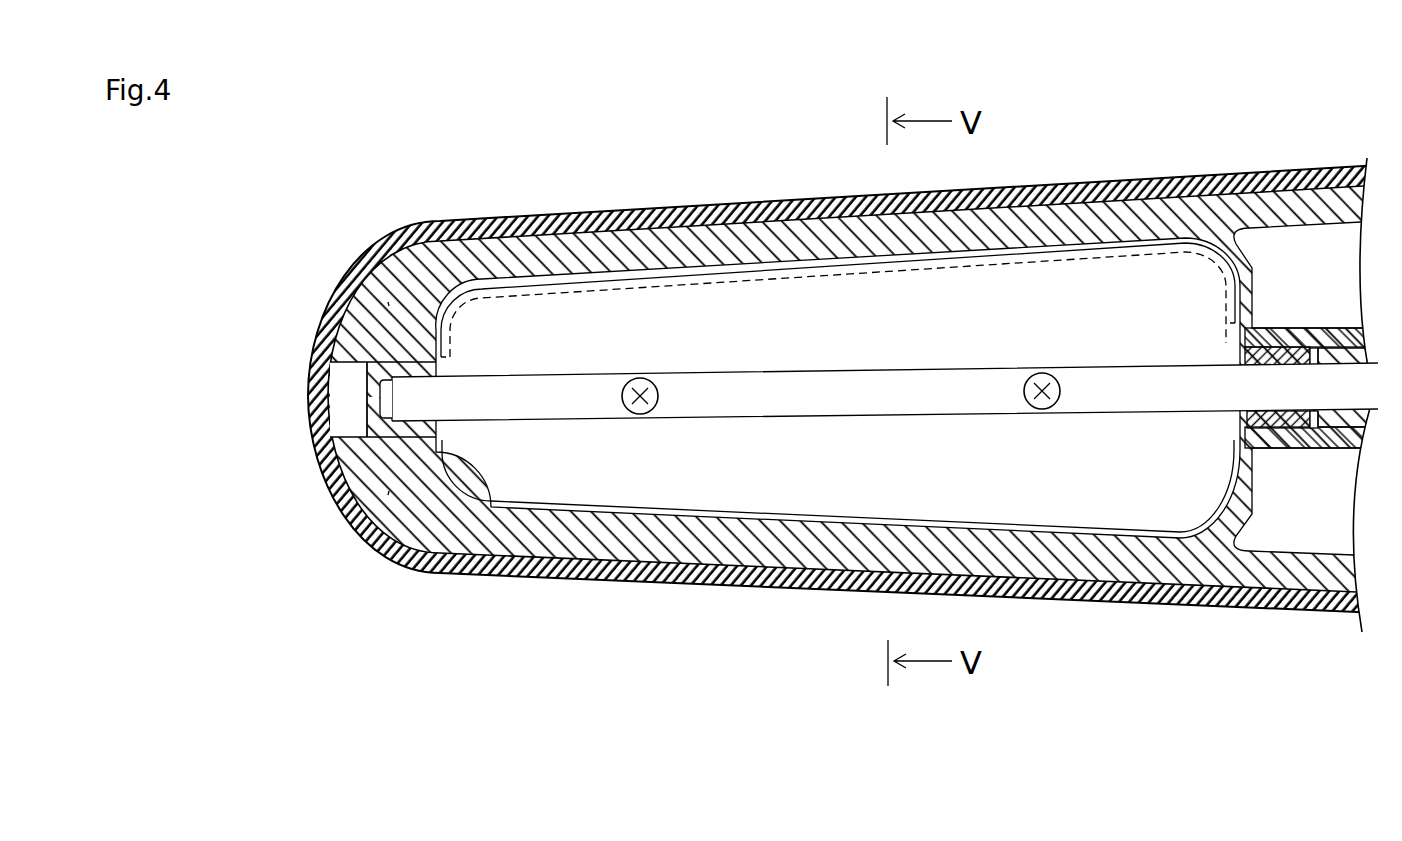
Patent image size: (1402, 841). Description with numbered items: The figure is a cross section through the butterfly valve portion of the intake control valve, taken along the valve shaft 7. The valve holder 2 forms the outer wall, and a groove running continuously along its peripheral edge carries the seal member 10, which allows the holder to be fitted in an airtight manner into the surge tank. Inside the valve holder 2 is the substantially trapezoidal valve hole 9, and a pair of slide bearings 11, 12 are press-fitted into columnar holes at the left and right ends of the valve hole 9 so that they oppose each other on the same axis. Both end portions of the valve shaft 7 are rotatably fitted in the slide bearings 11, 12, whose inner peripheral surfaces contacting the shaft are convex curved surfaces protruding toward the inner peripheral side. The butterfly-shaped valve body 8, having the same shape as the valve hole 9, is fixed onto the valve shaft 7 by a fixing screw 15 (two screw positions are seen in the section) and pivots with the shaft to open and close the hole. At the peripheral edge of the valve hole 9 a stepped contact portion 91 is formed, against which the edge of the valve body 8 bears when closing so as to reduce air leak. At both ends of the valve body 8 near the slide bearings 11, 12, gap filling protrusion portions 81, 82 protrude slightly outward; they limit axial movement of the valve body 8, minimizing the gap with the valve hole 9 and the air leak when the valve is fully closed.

The valve holder 2 is at (548, 216).
The seal member 10 is at (640, 212).
The valve body 8 is at (822, 288).
The valve hole 9 is at (1100, 250).
The contact portion 91 is at (1128, 247).
The gap filling protrusion portion 82 is at (1258, 330).
The slide bearing 12 is at (1288, 346).
The valve shaft 7 is at (1177, 372).
The fixing screw 15 is at (645, 378).
The slide bearing 11 is at (390, 365).
The gap filling protrusion portion 81 is at (388, 302).